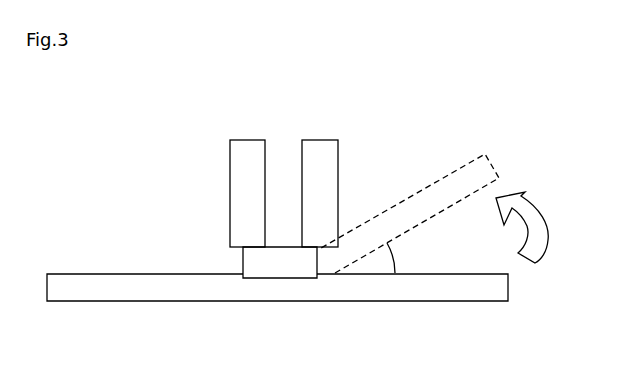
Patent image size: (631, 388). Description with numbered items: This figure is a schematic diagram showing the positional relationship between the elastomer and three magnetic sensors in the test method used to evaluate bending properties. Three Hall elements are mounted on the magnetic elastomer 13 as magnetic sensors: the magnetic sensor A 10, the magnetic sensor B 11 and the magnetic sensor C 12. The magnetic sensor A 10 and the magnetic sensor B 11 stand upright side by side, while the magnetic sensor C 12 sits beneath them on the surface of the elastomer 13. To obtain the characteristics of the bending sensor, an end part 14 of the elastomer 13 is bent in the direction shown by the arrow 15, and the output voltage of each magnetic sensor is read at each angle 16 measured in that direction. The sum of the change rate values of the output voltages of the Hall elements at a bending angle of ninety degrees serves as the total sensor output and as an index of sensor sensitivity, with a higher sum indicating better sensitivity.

The magnetic sensor A 10 is at (322, 143).
The magnetic sensor B 11 is at (242, 143).
The magnetic sensor C 12 is at (243, 264).
The elastomer 13 is at (212, 292).
The end part of elastomer 14 is at (508, 286).
The direction of bending the end part of elastomer 15 is at (527, 227).
The angle of bending the end part of elastomer 16 is at (392, 253).